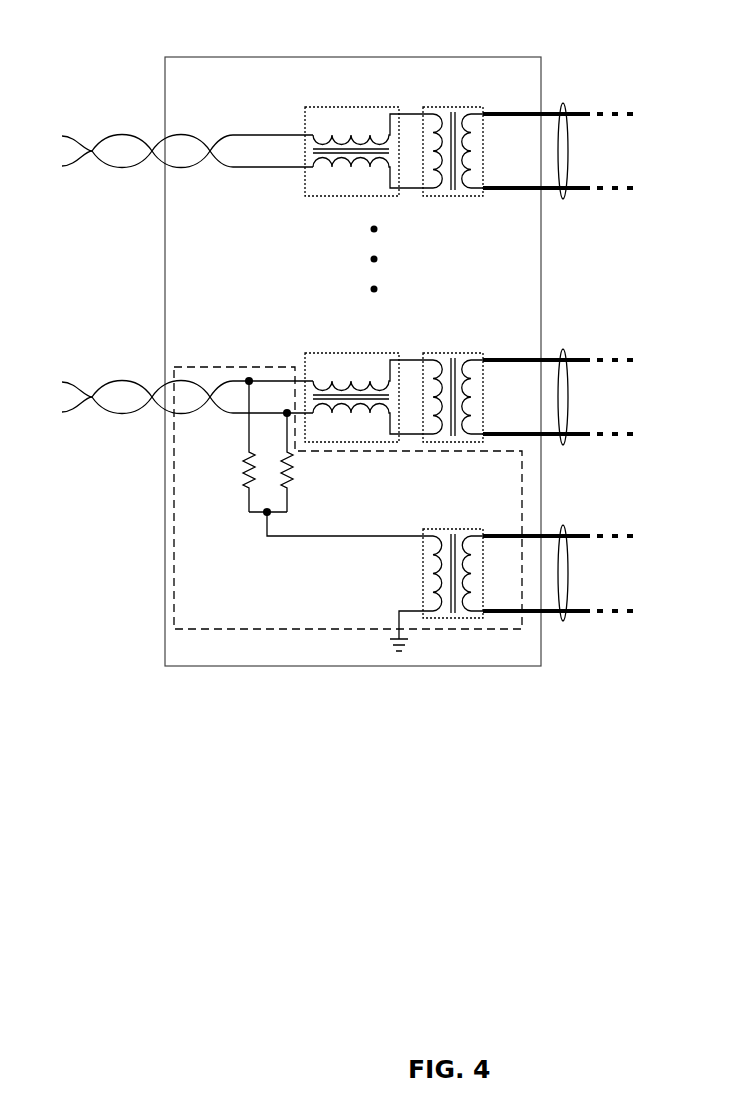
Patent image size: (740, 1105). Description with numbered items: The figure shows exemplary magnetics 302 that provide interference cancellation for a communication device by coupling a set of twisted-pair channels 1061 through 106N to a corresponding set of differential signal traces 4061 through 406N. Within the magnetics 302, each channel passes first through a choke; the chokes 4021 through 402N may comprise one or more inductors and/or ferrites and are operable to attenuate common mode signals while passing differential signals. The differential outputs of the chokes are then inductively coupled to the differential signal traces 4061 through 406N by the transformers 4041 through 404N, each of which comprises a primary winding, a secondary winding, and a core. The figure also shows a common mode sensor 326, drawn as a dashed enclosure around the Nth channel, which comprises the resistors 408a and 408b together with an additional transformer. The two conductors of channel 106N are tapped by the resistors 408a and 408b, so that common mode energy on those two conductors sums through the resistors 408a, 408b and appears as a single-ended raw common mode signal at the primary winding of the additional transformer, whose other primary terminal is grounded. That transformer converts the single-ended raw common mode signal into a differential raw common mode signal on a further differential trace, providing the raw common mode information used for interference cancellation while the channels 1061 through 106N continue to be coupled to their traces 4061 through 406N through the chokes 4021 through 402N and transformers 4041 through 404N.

The magnetics 302 is at (233, 57).
The channel 1061 is at (122, 135).
The channel 106N is at (125, 381).
The choke 4021 is at (334, 107).
The choke 402N is at (334, 353).
The transformer 4041 is at (477, 107).
The transformer 404N is at (477, 353).
The differential signal trace 4061 is at (563, 105).
The differential signal trace 406N is at (570, 340).
The common mode sensor 326 is at (228, 367).
The resistor 408a is at (246, 484).
The resistor 408b is at (291, 484).